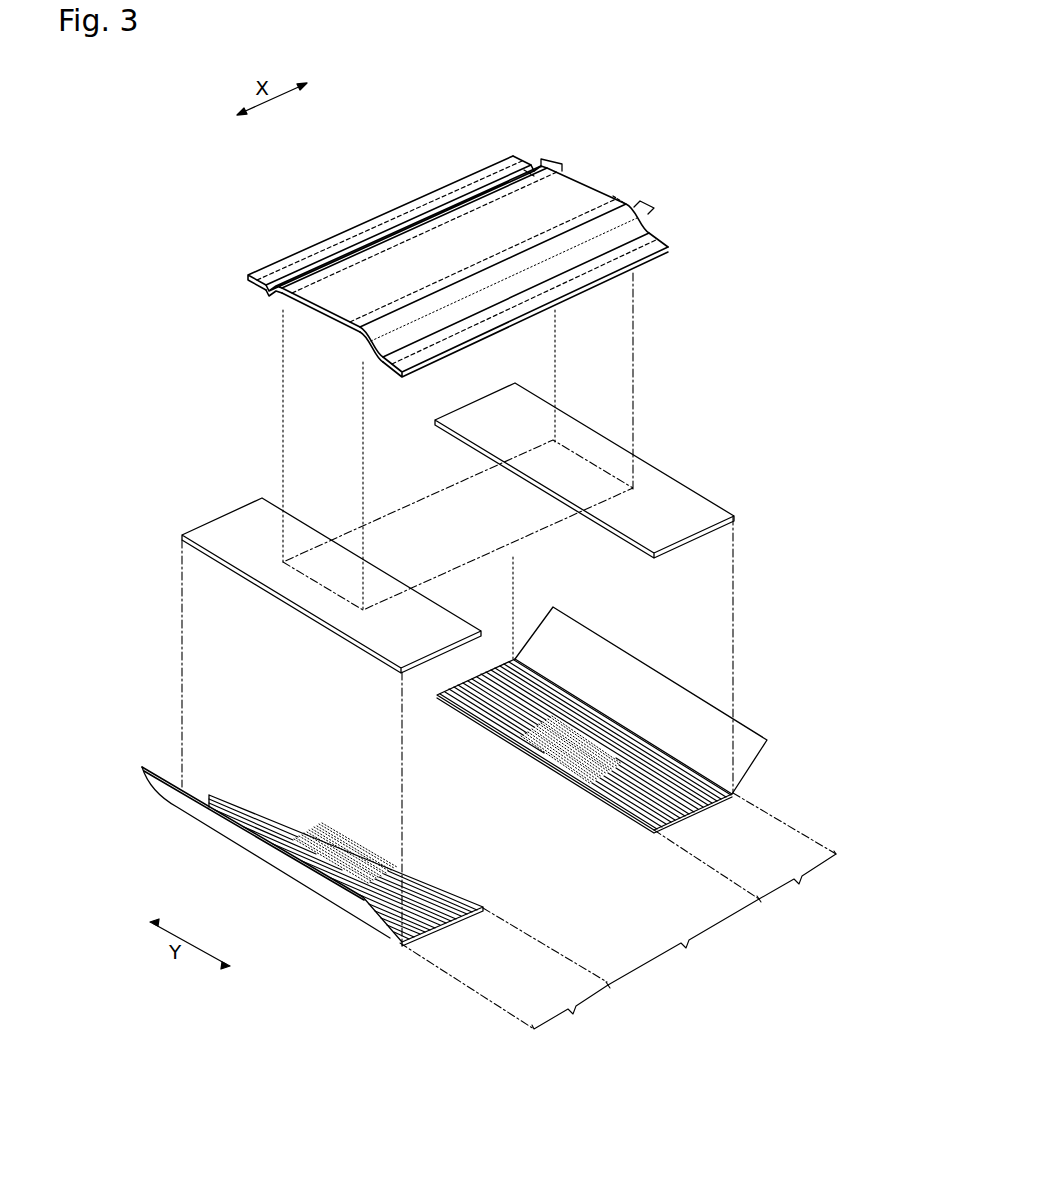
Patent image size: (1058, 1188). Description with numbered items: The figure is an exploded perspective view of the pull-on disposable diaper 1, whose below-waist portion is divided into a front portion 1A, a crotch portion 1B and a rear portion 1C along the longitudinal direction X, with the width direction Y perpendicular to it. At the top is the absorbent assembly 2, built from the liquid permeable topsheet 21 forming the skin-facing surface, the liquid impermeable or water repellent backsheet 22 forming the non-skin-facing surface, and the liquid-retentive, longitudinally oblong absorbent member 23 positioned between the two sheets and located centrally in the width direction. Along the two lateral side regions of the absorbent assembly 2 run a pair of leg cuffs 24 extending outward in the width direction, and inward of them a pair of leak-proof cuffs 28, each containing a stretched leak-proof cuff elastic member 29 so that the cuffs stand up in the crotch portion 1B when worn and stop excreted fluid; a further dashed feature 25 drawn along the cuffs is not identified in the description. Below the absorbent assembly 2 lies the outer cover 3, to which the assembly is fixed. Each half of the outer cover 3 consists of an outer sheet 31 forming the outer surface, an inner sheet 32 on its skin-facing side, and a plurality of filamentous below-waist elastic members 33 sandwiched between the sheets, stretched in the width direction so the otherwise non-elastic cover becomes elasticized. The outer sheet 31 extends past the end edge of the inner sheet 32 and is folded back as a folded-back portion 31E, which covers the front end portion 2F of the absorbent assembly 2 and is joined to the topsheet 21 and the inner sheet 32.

The pull-on disposable diaper 1 is at (765, 78).
The front portion 1A is at (797, 880).
The crotch portion 1B is at (683, 942).
The rear portion 1C is at (570, 1009).
The absorbent assembly 2 is at (378, 167).
The front end portion 2F is at (619, 182).
The topsheet 21 is at (578, 192).
The backsheet 22 is at (266, 298).
The absorbent member 23 is at (285, 307).
The leg cuffs 24 is at (357, 232).
The groove 25 is at (440, 192).
The leak-proof cuffs 28 is at (553, 160).
The leak-proof cuff elastic member 29 is at (528, 177).
The outer cover 3 is at (127, 520).
The outer sheet 31 is at (706, 804).
The folded-back portion 31E is at (629, 679).
The inner sheet 32 is at (223, 531).
The below-waist elastic members 33 is at (710, 782).